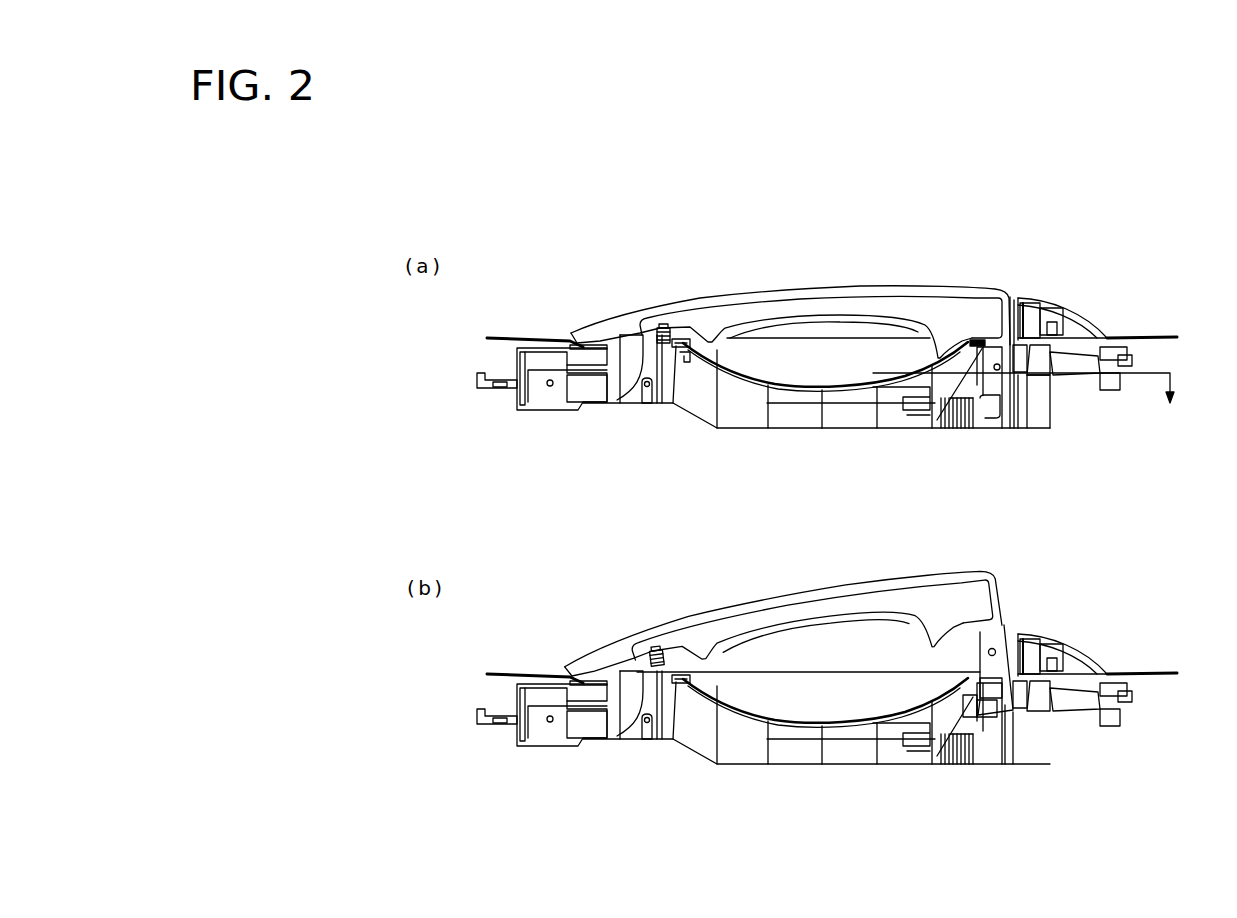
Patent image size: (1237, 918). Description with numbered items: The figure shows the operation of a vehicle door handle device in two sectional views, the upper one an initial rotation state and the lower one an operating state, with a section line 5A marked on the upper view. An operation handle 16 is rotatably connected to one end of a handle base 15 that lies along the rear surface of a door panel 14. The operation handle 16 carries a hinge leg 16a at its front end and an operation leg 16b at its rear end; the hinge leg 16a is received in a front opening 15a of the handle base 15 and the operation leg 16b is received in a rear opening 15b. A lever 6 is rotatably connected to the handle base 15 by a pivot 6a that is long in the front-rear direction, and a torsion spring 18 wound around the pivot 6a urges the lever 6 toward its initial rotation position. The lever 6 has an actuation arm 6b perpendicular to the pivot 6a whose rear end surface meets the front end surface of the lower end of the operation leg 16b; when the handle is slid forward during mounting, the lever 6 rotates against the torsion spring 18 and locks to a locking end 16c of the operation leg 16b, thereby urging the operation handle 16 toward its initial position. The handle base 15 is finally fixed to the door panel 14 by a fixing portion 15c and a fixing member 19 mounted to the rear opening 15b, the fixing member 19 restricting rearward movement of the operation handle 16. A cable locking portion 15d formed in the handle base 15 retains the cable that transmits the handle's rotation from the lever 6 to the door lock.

The door panel 14 is at (1137, 337).
The handle base 15 is at (740, 430).
The front opening 15a is at (646, 395).
The rear opening 15b is at (1009, 725).
The fixing portion 15c is at (483, 390).
The cable locking portion 15d is at (970, 717).
The operation handle 16 is at (853, 298).
The hinge leg 16a is at (550, 395).
The operation leg 16b is at (998, 380).
The locking end 16c is at (997, 717).
The torsion spring 18 is at (958, 430).
The fixing member 19 is at (1067, 313).
The lever 6 is at (990, 418).
The pivot 6a is at (937, 420).
The actuation arm 6b is at (1005, 670).
The section line 5A is at (1039, 388).